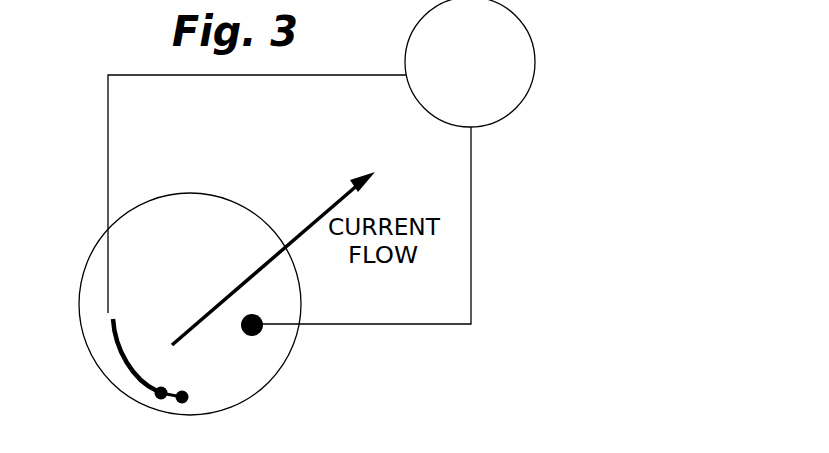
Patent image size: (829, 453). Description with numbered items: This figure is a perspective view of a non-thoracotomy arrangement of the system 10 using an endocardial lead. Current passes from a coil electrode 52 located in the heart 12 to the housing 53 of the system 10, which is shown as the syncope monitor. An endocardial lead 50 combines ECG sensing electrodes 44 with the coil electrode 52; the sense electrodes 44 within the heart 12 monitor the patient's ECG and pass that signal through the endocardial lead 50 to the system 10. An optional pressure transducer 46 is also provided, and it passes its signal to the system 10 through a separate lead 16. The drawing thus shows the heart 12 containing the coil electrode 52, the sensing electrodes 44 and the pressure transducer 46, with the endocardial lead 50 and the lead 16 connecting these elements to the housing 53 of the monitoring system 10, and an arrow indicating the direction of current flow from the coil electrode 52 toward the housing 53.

The system 10 is at (534, 63).
The heart 12 is at (142, 202).
The lead 16 is at (472, 290).
The ECG sensing electrodes 44 is at (172, 392).
The pressure transducer 46 is at (260, 335).
The endocardial lead 50 is at (108, 76).
The coil electrode 52 is at (118, 342).
The housing 53 is at (520, 107).